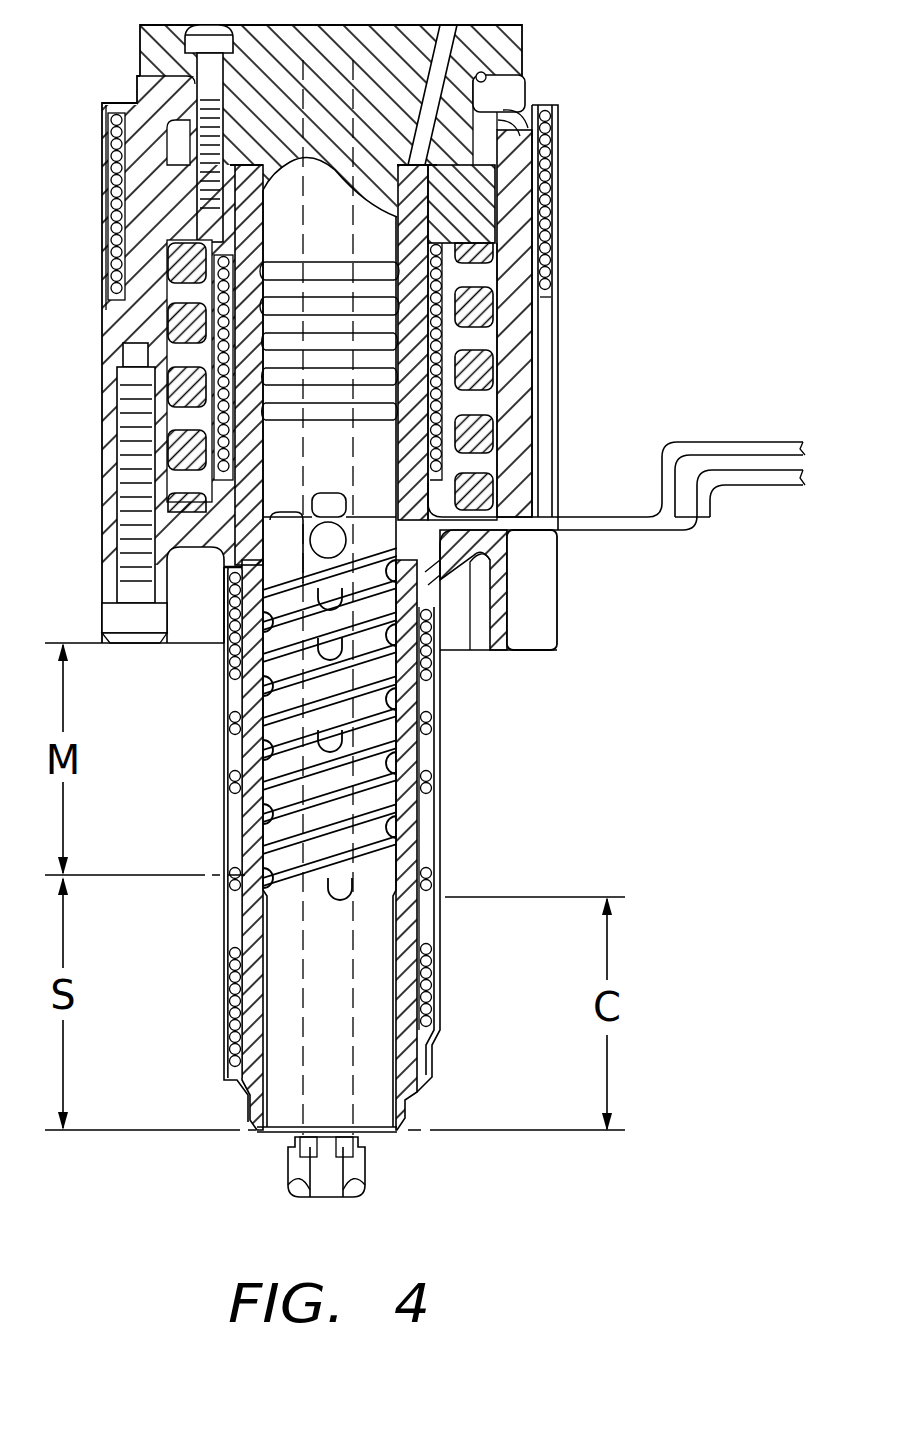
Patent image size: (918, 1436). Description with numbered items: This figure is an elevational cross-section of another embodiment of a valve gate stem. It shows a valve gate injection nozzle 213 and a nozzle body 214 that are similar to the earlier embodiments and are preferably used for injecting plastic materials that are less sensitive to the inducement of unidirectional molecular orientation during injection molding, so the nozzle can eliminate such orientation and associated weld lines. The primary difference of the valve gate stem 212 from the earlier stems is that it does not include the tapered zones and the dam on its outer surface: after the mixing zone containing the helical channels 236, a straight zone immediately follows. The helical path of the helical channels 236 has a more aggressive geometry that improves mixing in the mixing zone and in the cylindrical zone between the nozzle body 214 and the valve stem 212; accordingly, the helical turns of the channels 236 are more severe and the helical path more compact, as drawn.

The valve gate injection nozzle 213 is at (515, 343).
The nozzle body 214 is at (409, 856).
The valve gate stem 212 is at (372, 933).
The helical channels 236 is at (392, 750).